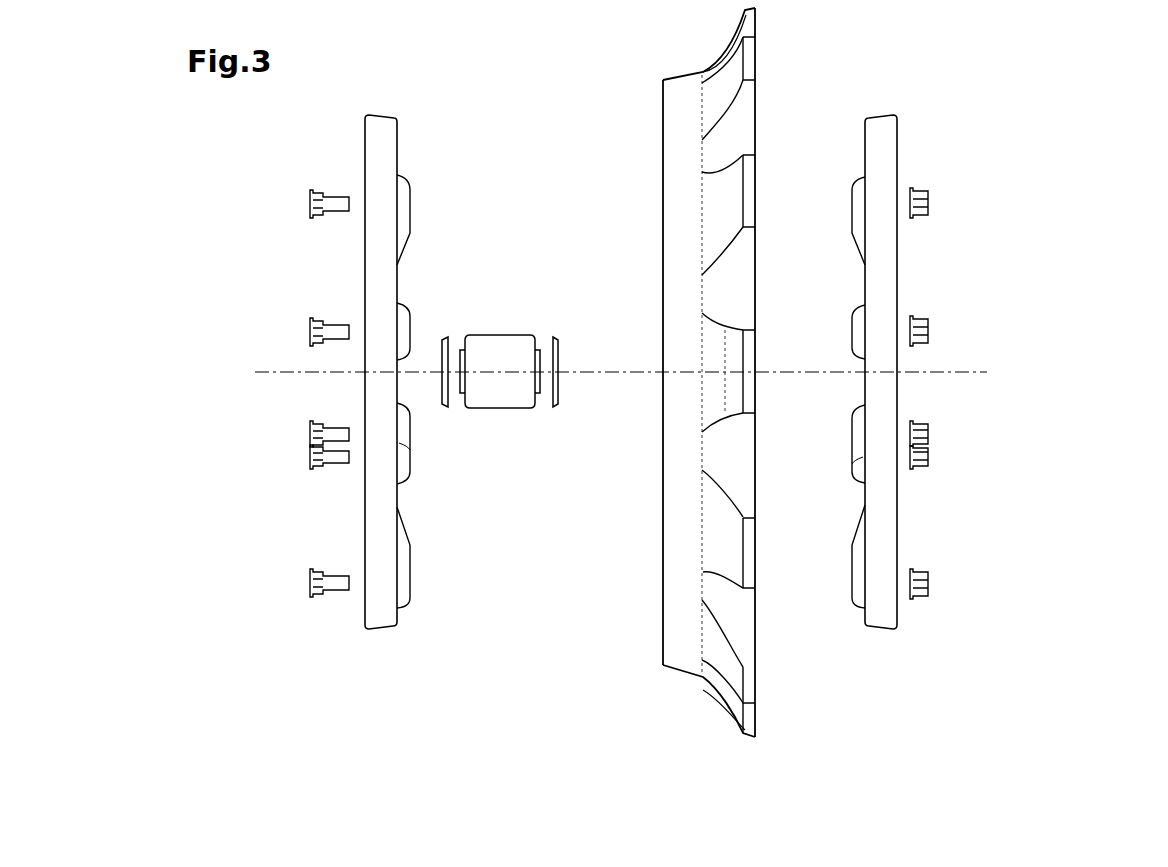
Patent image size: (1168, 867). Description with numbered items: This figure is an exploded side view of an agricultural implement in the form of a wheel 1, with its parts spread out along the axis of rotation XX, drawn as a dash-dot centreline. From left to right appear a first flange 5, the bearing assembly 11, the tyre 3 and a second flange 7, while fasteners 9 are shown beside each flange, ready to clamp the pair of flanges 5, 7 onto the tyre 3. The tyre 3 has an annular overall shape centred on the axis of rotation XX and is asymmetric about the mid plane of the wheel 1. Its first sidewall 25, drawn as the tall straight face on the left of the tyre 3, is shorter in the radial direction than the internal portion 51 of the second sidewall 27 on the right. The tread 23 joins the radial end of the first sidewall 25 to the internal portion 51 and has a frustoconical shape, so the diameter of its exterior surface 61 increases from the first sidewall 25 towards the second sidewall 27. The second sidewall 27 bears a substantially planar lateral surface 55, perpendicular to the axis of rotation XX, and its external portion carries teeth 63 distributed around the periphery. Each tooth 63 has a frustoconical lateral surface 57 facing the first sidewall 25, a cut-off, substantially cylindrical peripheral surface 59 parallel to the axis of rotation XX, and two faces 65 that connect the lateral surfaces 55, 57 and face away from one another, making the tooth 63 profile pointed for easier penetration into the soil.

The wheel 1 is at (1040, 86).
The tyre 3 is at (703, 33).
The flange 5 is at (382, 102).
The flange 7 is at (880, 102).
The fasteners 9 is at (298, 318).
The bearing assembly 11 is at (506, 308).
The tread 23 is at (680, 527).
The first sidewall 25 is at (659, 97).
The second sidewall 27 is at (760, 95).
The internal portion 51 is at (757, 722).
The lateral surface 55 is at (757, 455).
The lateral surface 57 is at (733, 380).
The peripheral surface 59 is at (750, 193).
The exterior surface 61 is at (682, 643).
The teeth 63 is at (733, 557).
The faces 65 is at (733, 317).
The axis of rotation XX is at (975, 372).